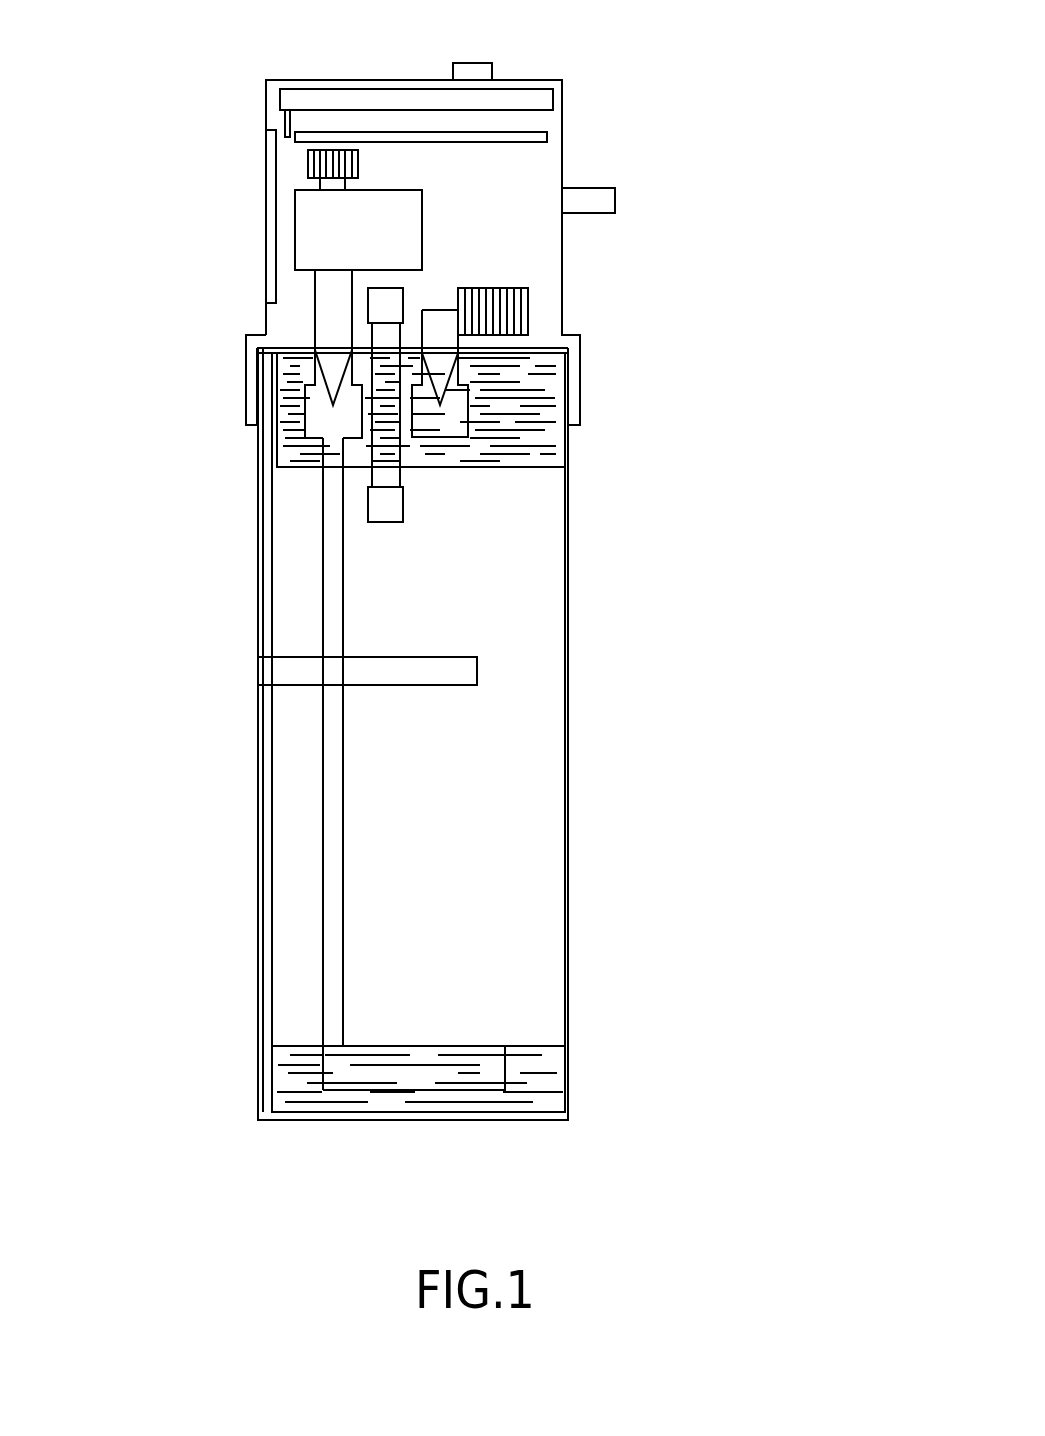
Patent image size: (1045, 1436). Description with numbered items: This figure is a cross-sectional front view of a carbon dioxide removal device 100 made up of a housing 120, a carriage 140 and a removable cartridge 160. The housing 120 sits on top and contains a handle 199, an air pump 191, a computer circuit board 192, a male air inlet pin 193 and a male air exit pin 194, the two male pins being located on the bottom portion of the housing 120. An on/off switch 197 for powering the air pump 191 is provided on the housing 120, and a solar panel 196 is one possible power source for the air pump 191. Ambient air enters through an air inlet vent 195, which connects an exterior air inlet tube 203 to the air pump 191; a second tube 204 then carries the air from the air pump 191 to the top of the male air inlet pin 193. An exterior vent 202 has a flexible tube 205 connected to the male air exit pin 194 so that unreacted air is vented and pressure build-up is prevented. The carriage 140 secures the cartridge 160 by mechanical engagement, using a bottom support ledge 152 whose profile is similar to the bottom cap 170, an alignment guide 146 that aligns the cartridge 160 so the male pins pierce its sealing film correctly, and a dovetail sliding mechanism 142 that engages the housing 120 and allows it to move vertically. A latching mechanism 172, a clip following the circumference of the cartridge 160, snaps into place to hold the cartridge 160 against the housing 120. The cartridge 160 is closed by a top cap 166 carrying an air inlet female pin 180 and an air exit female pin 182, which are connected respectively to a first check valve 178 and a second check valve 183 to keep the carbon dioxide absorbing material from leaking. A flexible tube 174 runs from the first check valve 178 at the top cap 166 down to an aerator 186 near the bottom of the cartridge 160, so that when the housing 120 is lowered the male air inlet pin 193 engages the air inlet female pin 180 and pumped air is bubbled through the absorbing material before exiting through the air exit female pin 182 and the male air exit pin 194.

The CO2 removal device 100 is at (801, 15).
The housing 120 is at (610, 268).
The carriage 140 is at (244, 568).
The sliding mechanism 142 is at (250, 277).
The alignment guide 146 is at (244, 670).
The bottom support ledge 152 is at (322, 1122).
The cartridge 160 is at (584, 648).
The top cap 166 is at (582, 433).
The bottom cap 170 is at (564, 1099).
The latching mechanism 172 is at (352, 491).
The flexible tube 174 is at (308, 867).
The check valve 178 is at (320, 402).
The air inlet female pin 180 is at (322, 382).
The air exit female pin 182 is at (452, 380).
The check valve 183 is at (458, 420).
The aerator 186 is at (507, 1065).
The air pump 191 is at (282, 217).
The computer circuit board 192 is at (553, 136).
The male air inlet pin 193 is at (335, 328).
The male air exit pin 194 is at (440, 407).
The air inlet vent 195 is at (287, 163).
The solar panel 196 is at (556, 99).
The on/off switch 197 is at (488, 63).
The handle 199 is at (632, 199).
The exterior vent 202 is at (547, 310).
The exterior air inlet tube 203 is at (358, 165).
The second tube 204 is at (300, 283).
The flexible tube 205 is at (438, 330).